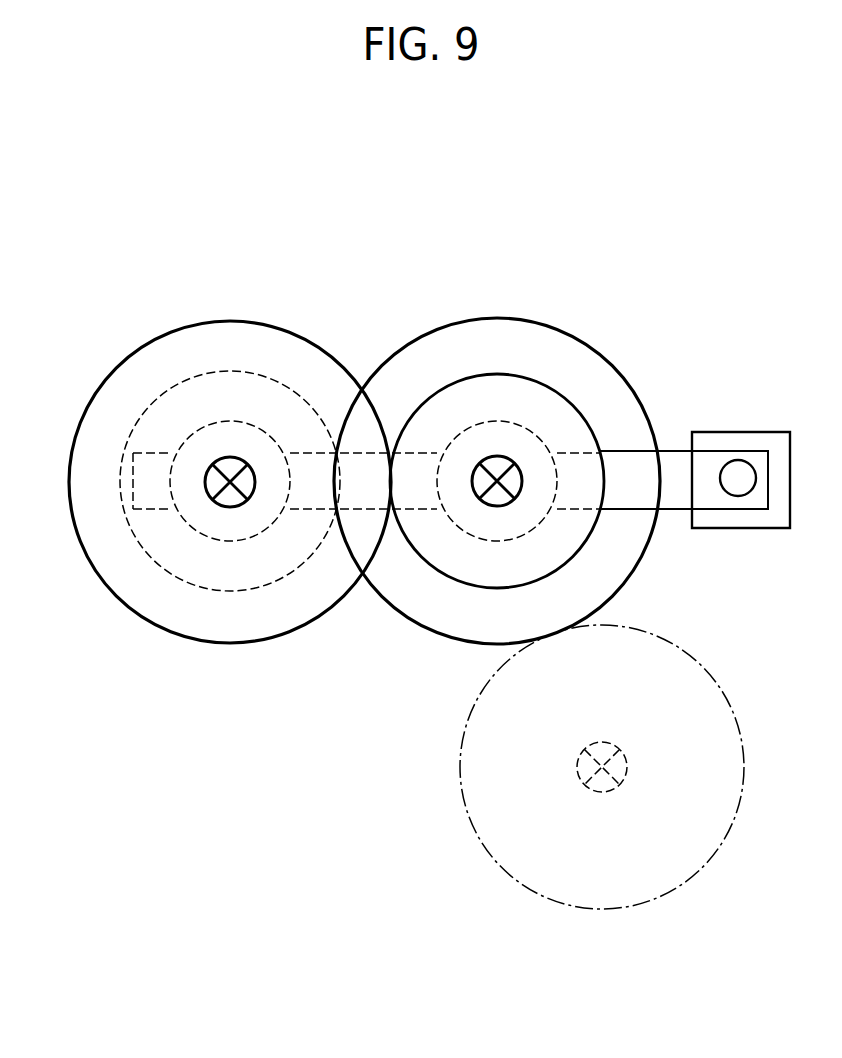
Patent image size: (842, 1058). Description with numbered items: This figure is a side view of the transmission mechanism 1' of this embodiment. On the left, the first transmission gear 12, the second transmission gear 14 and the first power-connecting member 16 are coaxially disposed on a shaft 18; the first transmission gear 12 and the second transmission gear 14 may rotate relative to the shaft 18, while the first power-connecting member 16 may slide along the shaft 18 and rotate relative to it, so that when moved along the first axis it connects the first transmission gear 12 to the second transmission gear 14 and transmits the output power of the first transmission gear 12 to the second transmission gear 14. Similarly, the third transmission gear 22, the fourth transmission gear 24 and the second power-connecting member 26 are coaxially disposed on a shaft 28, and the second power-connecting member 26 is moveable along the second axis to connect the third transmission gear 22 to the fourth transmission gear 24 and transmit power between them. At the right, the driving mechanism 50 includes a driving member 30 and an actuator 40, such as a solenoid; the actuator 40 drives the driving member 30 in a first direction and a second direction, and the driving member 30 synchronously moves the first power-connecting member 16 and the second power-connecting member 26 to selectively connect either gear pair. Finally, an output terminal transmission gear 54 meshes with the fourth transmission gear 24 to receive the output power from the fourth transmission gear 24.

The transmission mechanism 1' is at (437, 484).
The first transmission gear 12 is at (307, 334).
The second transmission gear 14 is at (223, 370).
The first power-connecting member 16 is at (195, 428).
The shaft 18 is at (230, 497).
The third transmission gear 22 is at (548, 382).
The fourth transmission gear 24 is at (613, 363).
The second power-connecting member 26 is at (480, 423).
The shaft 28 is at (482, 478).
The driving member 30 is at (713, 443).
The actuator 40 is at (756, 442).
The driving mechanism 50 is at (768, 315).
The output terminal transmission gear 54 is at (472, 822).